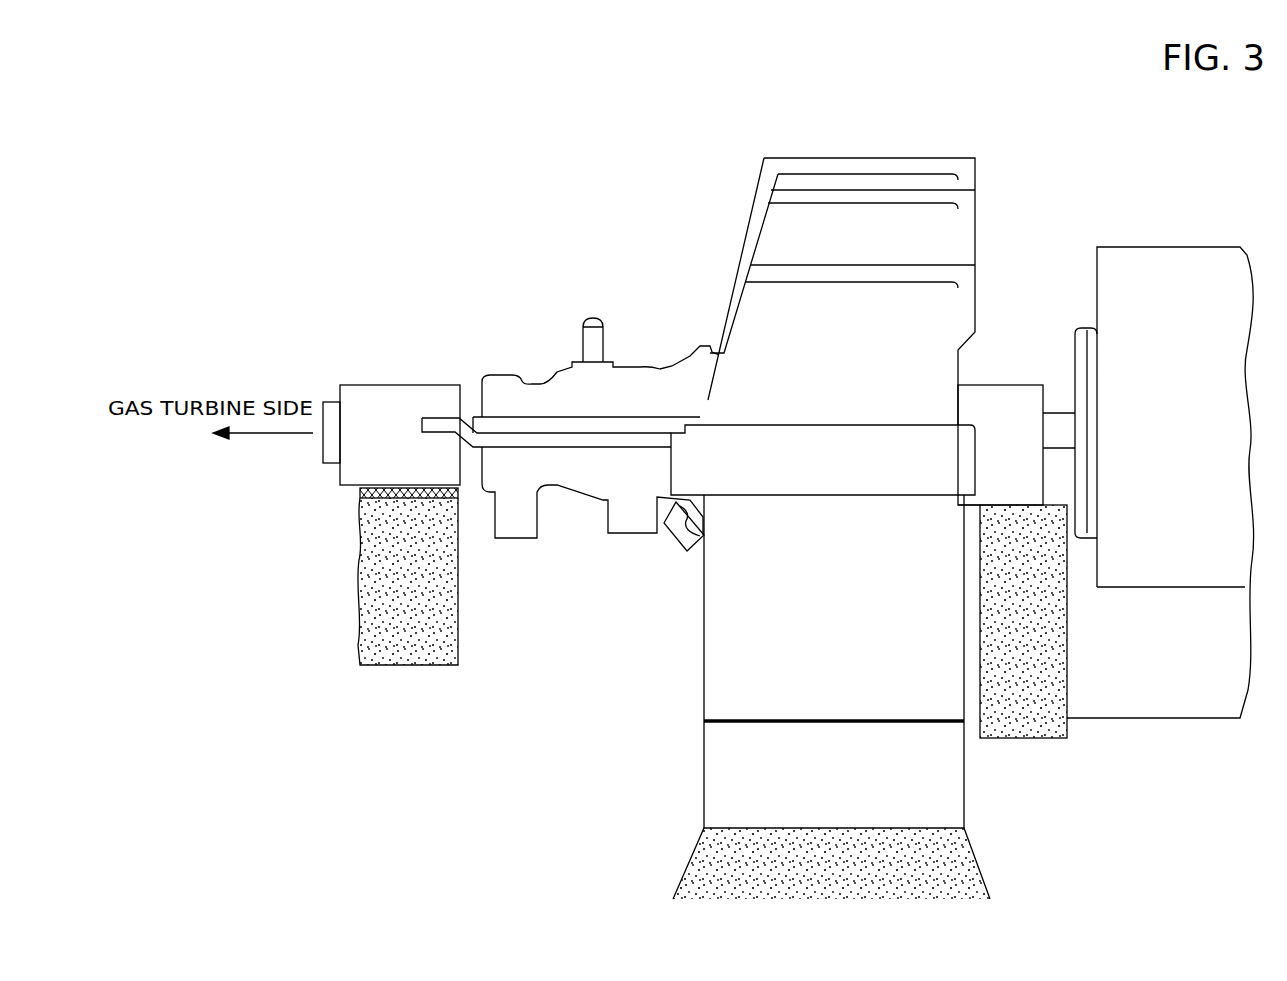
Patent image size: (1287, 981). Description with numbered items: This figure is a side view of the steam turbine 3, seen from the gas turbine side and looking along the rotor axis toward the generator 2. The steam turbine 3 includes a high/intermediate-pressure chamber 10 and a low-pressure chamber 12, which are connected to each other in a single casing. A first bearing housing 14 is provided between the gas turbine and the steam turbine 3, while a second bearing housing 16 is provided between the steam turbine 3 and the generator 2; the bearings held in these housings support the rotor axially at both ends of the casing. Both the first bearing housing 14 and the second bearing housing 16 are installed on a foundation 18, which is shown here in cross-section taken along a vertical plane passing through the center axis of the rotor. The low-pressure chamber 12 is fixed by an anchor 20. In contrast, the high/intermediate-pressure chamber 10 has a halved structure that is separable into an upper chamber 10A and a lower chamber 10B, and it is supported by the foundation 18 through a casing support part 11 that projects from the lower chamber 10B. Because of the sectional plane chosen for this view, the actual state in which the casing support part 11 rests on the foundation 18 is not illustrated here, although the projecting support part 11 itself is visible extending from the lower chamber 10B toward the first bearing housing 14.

The generator 2 is at (1170, 247).
The steam turbine 3 is at (1064, 176).
The high/intermediate-pressure chamber 10 is at (579, 418).
The upper chamber 10A is at (546, 392).
The lower chamber 10B is at (563, 480).
The casing support part 11 is at (443, 416).
The low-pressure chamber 12 is at (851, 157).
The first bearing housing 14 is at (381, 383).
The second bearing housing 16 is at (996, 383).
The foundation 18 is at (408, 647).
The anchor 20 is at (978, 869).